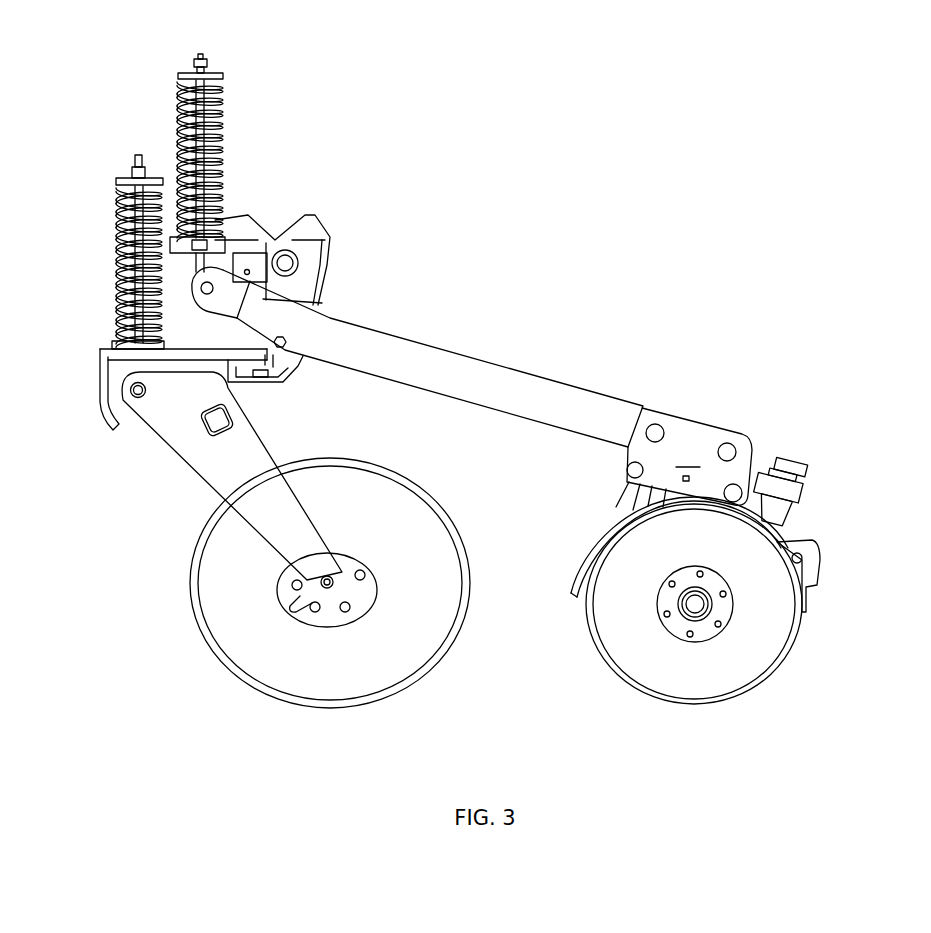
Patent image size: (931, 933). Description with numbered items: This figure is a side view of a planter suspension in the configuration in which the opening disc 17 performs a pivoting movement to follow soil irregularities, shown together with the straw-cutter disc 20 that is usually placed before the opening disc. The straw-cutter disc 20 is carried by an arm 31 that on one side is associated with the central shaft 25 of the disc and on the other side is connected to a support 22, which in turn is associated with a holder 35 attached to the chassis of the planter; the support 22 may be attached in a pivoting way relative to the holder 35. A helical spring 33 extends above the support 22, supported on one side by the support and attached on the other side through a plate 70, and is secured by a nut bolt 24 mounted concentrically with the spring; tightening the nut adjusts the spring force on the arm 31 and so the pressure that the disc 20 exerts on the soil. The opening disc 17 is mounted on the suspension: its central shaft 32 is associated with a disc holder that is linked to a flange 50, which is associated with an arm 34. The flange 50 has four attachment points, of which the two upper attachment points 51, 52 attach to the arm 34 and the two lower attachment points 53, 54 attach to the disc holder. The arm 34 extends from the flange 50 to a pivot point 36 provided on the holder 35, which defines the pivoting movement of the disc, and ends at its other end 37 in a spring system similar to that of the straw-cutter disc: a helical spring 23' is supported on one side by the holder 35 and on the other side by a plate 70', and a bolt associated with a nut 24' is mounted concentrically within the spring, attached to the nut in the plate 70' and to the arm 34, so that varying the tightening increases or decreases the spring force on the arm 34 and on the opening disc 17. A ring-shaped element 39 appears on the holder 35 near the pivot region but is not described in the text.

The opening disc 17 is at (742, 660).
The straw-cutter disc 20 is at (290, 672).
The support 22 is at (103, 385).
The helical spring 23' is at (232, 176).
The nut bolt 24 is at (128, 139).
The nut 24' is at (226, 49).
The central shaft 25 is at (340, 582).
The arm 31 is at (230, 462).
The central shaft 32 is at (695, 604).
The helical spring 33 is at (120, 300).
The arm 34 is at (477, 383).
The holder 35 is at (330, 257).
The pivot point 36 is at (287, 339).
The other end of arm 37 is at (204, 287).
The pivot ring 39 is at (290, 262).
The flange 50 is at (684, 459).
The upper attachment point 51 is at (656, 433).
The upper attachment point 52 is at (727, 443).
The lower attachment point 53 is at (634, 470).
The lower attachment point 54 is at (735, 492).
The plate 70 is at (112, 166).
The plate 70' is at (174, 62).